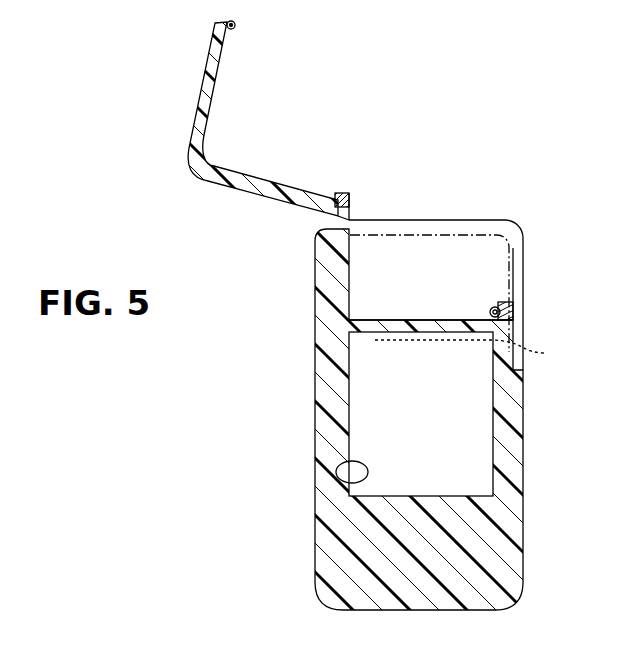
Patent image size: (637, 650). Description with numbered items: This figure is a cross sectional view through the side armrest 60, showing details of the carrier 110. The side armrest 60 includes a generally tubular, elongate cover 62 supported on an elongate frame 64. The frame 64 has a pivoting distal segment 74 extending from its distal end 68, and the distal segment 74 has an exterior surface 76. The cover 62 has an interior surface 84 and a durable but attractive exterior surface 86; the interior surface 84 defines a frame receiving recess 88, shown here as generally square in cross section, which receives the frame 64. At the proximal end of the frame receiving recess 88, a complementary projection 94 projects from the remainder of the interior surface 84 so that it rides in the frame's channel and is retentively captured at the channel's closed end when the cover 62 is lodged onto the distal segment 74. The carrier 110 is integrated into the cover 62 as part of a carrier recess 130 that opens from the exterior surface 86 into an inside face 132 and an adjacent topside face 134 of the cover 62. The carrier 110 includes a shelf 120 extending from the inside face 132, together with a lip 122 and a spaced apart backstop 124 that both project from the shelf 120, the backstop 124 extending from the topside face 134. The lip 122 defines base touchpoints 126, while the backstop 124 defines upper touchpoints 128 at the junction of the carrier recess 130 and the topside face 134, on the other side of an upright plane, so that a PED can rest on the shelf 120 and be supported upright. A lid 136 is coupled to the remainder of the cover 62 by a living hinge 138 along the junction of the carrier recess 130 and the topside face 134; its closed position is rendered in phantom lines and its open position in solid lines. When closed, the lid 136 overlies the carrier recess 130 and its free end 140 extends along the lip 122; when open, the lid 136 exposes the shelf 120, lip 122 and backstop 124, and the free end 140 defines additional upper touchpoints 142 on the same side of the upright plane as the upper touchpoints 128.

The side armrest 60 is at (315, 412).
The cover 62 is at (313, 438).
The frame 64 is at (500, 393).
The distal end 68 is at (476, 448).
The distal segment 74 is at (481, 408).
The exterior surface 76 is at (494, 481).
The interior surface 84 is at (350, 488).
The exterior surface 86 is at (315, 527).
The frame receiving recess 88 is at (421, 414).
The projection 94 is at (474, 350).
The carrier 110 is at (380, 262).
The shelf 120 is at (377, 318).
The lip 122 is at (499, 306).
The backstop 124 is at (350, 280).
The base touchpoints 126 is at (491, 311).
The upper touchpoints 128 is at (350, 198).
The carrier recess 130 is at (484, 258).
The inside face 132 is at (524, 289).
The topside face 134 is at (443, 218).
The lid 136 is at (200, 97).
The hinge 138 is at (340, 213).
The free end 140 is at (220, 50).
The additional upper touchpoints 142 is at (236, 24).